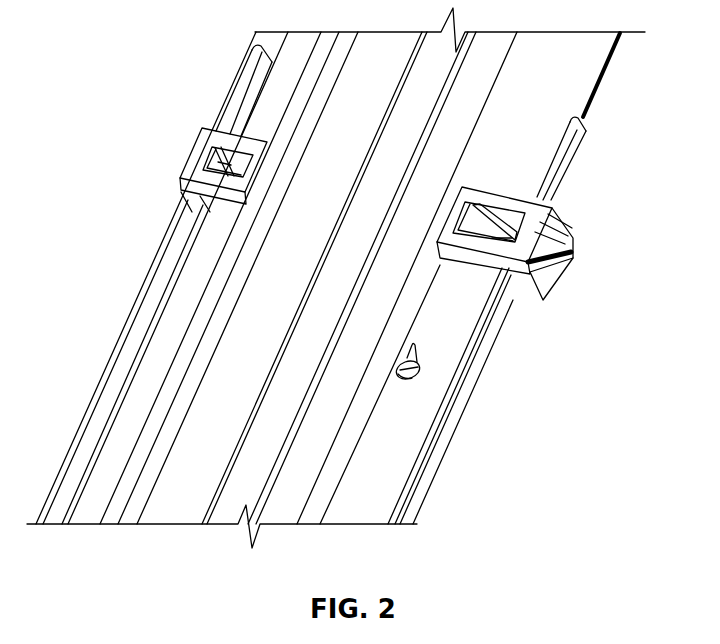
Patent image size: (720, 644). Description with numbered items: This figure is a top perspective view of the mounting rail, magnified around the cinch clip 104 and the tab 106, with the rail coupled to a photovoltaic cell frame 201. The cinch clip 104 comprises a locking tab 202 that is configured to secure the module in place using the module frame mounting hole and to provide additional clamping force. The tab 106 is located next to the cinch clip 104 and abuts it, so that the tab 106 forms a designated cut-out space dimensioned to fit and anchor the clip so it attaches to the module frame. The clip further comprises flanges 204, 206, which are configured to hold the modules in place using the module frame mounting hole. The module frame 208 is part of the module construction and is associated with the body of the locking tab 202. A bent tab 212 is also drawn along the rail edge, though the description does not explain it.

The photovoltaic cell frame 201 is at (575, 52).
The module frame 208 is at (520, 77).
The bent tab 212 is at (560, 167).
The cinch clip 104 is at (530, 220).
The locking tab 202 is at (563, 255).
The flange 204 is at (417, 355).
The tab 106 is at (422, 368).
The flange 206 is at (405, 380).